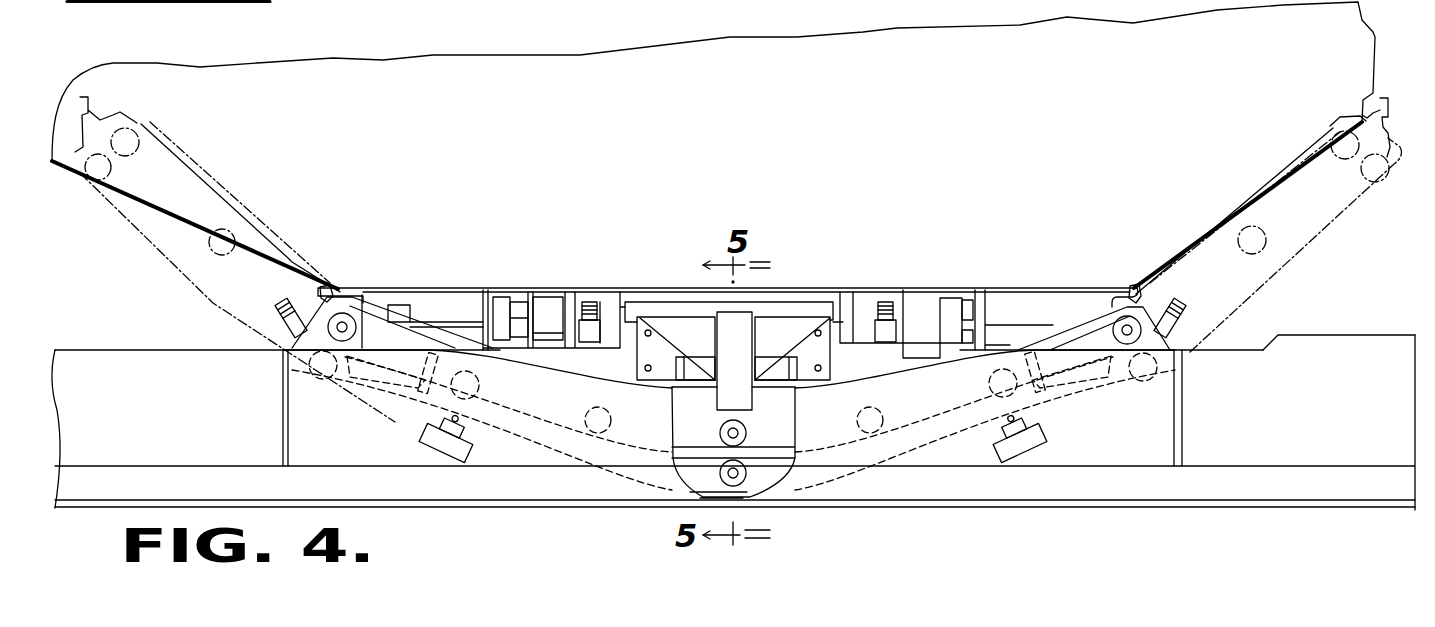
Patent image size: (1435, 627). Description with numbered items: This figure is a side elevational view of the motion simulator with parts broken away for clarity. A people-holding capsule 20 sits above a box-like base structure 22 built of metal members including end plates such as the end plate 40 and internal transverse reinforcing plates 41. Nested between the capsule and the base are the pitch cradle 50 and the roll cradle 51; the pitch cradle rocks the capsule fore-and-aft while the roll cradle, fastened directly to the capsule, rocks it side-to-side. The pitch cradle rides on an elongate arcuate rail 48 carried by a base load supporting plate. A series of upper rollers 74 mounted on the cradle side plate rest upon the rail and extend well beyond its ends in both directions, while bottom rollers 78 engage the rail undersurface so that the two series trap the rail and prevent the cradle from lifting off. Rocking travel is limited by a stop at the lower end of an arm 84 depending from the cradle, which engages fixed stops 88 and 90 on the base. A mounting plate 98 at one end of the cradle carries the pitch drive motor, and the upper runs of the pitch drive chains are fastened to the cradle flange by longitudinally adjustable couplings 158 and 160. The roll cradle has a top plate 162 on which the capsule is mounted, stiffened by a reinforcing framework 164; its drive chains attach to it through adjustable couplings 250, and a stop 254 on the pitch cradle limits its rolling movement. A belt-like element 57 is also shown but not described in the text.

The people-holding capsule 20 is at (704, 50).
The base structure 22 is at (1213, 515).
The end plate 40 is at (1422, 416).
The reinforcing plate 41 is at (283, 418).
The rail 48 is at (768, 447).
The pitch cradle 50 is at (177, 277).
The roll cradle 51 is at (590, 272).
The belt 57 is at (729, 420).
The roller 74 is at (138, 140).
The roller 78 is at (281, 380).
The arm 84 is at (742, 360).
The stop 88 is at (399, 415).
The stop 90 is at (1033, 357).
The mounting plate 98 is at (1338, 338).
The longitudinally adjustable coupling 158 is at (290, 318).
The longitudinally adjustable coupling 160 is at (1173, 333).
The top plate 162 is at (465, 286).
The reinforcing framework 164 is at (405, 298).
The longitudinally adjustable coupling 250 is at (600, 327).
The stop 254 is at (547, 297).